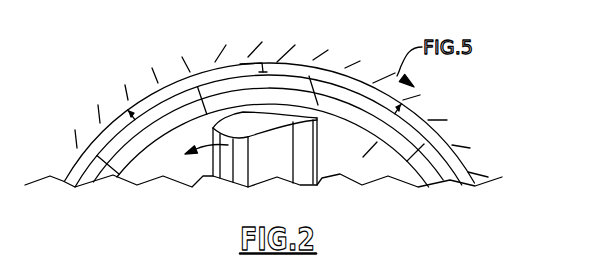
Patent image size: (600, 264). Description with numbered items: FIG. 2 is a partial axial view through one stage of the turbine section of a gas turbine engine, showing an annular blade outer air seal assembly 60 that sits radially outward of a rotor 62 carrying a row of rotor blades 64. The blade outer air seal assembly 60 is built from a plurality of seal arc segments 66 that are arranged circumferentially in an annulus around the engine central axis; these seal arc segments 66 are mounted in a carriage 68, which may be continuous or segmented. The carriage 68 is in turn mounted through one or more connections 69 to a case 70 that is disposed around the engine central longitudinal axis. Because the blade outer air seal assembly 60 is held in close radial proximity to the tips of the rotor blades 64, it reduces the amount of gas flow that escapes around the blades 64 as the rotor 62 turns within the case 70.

The blade outer air seal assembly 60 is at (420, 134).
The rotor 62 is at (263, 200).
The rotor blades 64 is at (213, 172).
The seal arc segments 66 is at (308, 73).
The carriage 68 is at (283, 76).
The connections 69 is at (241, 62).
The case 70 is at (425, 113).